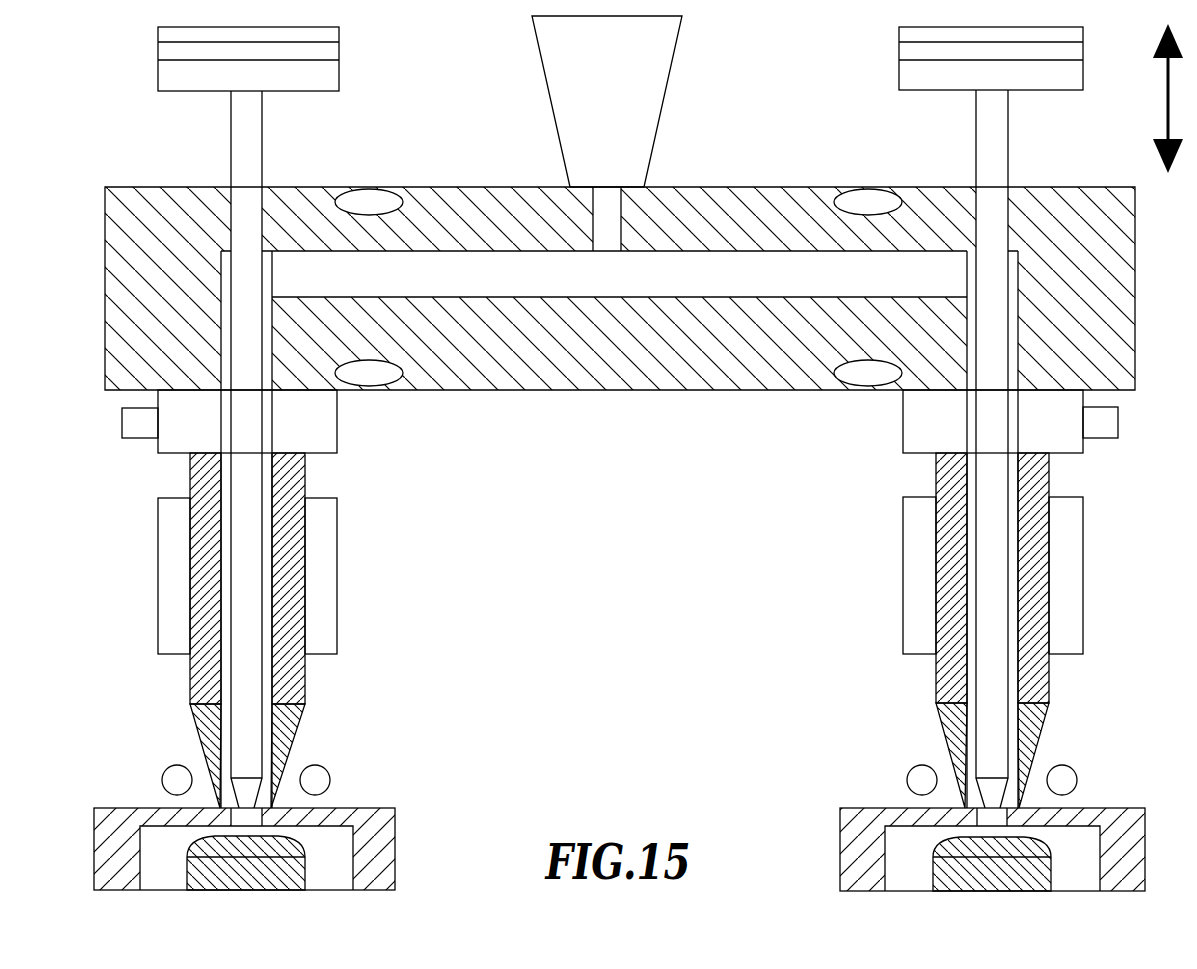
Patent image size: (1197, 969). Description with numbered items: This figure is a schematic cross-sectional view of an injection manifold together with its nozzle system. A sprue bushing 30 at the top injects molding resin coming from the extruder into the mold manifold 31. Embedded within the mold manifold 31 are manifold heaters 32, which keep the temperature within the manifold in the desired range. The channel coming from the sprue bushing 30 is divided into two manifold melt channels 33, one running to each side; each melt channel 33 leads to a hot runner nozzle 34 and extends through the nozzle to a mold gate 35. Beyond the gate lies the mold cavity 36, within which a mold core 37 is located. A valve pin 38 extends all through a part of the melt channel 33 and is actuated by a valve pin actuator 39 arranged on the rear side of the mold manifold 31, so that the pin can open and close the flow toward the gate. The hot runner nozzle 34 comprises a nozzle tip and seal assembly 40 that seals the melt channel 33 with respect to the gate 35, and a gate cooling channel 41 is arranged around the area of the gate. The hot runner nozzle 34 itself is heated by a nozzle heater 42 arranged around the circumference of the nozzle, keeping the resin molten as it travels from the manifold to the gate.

The sprue bushing 30 is at (617, 70).
The mold manifold 31 is at (712, 240).
The manifold heaters 32 is at (372, 202).
The manifold melt channel 33 is at (737, 283).
The hot runner nozzle 34 is at (303, 678).
The mold gate 35 is at (293, 743).
The mold cavity 36 is at (335, 842).
The mold core 37 is at (283, 873).
The valve pin 38 is at (247, 482).
The valve pin actuator 39 is at (172, 76).
The nozzle tip and seal assembly 40 is at (1045, 730).
The gate cooling channel 41 is at (918, 780).
The nozzle heater 42 is at (915, 540).